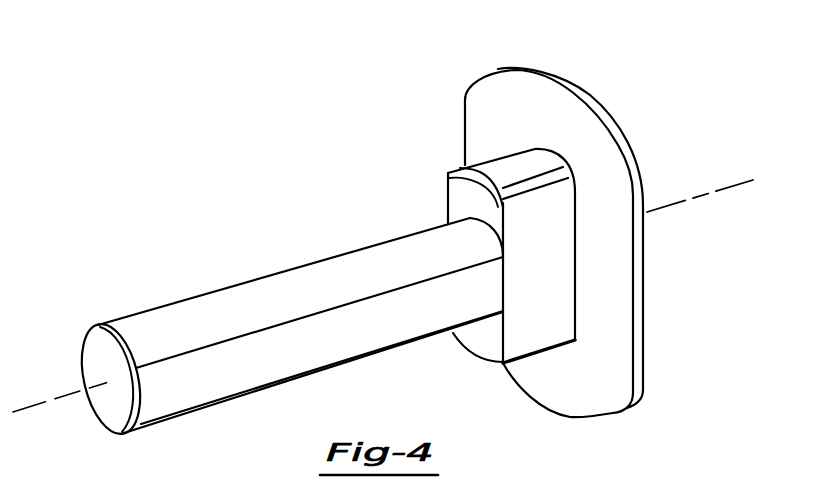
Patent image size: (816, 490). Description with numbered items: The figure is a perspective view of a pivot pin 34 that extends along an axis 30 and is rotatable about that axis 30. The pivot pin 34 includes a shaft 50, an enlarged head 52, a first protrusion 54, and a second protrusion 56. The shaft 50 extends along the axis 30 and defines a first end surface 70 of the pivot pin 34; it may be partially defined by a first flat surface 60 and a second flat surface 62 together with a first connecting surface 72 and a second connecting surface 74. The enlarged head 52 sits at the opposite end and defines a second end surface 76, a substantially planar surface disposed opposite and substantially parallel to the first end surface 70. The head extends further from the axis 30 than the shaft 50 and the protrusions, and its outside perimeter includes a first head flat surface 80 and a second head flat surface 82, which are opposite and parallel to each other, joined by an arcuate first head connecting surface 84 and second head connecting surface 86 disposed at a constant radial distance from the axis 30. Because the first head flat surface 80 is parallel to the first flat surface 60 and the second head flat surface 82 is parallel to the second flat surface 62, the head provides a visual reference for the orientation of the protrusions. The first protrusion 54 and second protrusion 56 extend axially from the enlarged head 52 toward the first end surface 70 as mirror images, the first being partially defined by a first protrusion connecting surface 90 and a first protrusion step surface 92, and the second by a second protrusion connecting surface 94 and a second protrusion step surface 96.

The axis 30 is at (737, 182).
The pivot pin 34 is at (305, 160).
The shaft 50 is at (152, 308).
The enlarged head 52 is at (640, 155).
The first protrusion 54 is at (465, 165).
The second protrusion 56 is at (503, 365).
The first flat surface 60 is at (232, 313).
The second flat surface 62 is at (207, 382).
The first end surface 70 is at (100, 365).
The first connecting surface 72 is at (327, 273).
The second connecting surface 74 is at (282, 385).
The second end surface 76 is at (643, 285).
The first head flat surface 80 is at (465, 132).
The second head flat surface 82 is at (637, 367).
The first head connecting surface 84 is at (550, 70).
The second head connecting surface 86 is at (570, 417).
The first protrusion connecting surface 90 is at (508, 167).
The first protrusion step surface 92 is at (460, 195).
The second protrusion connecting surface 94 is at (483, 360).
The second protrusion step surface 96 is at (470, 345).